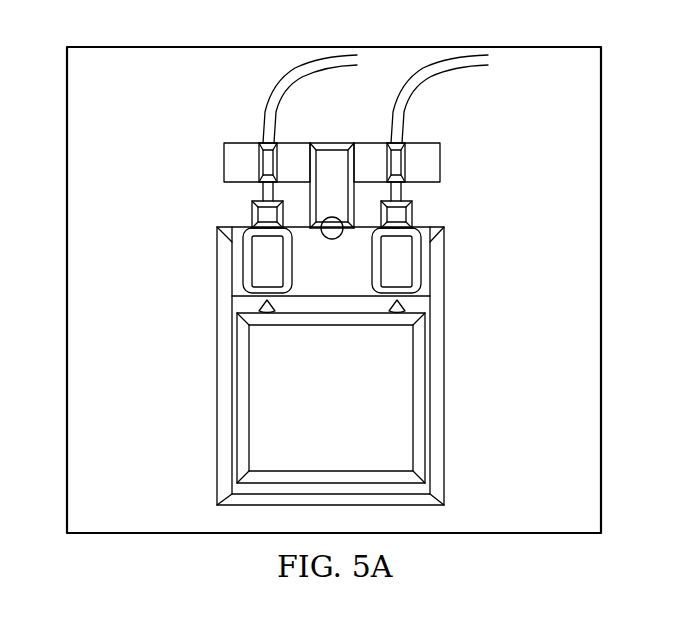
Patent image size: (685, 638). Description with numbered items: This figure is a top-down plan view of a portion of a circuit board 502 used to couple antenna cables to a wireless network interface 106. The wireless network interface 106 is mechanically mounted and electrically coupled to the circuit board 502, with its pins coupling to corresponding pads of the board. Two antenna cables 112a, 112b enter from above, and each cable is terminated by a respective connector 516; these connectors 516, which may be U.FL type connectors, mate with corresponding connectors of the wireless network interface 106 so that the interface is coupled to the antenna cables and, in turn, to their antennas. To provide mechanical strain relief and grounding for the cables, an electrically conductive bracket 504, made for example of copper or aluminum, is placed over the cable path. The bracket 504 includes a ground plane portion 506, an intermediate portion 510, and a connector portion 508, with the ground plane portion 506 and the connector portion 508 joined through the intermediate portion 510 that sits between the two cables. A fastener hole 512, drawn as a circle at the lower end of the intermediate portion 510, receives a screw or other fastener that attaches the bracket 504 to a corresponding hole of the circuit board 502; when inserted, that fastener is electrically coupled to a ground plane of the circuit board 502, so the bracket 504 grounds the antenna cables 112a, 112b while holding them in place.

The circuit board 502 is at (602, 100).
The bracket 504 is at (440, 160).
The ground plane portion 506 is at (224, 163).
The connector portion 508 is at (428, 263).
The intermediate portion 510 is at (333, 142).
The fastener hole 512 is at (335, 240).
The connectors 516 is at (253, 213).
The antenna cable 112a is at (405, 116).
The antenna cable 112b is at (268, 104).
The wireless network interface 106 is at (350, 409).